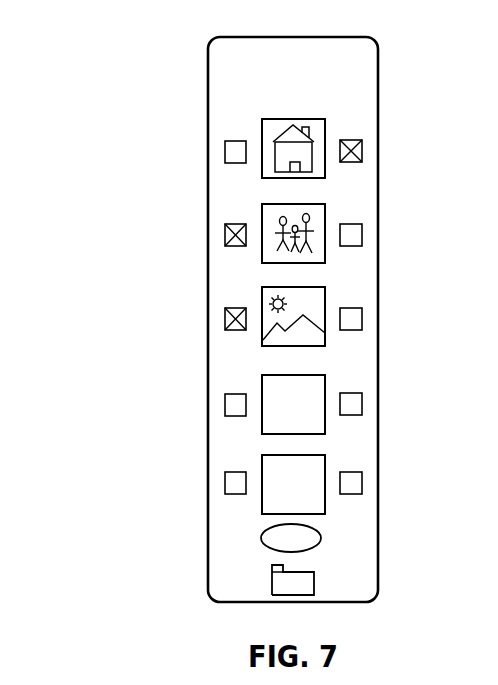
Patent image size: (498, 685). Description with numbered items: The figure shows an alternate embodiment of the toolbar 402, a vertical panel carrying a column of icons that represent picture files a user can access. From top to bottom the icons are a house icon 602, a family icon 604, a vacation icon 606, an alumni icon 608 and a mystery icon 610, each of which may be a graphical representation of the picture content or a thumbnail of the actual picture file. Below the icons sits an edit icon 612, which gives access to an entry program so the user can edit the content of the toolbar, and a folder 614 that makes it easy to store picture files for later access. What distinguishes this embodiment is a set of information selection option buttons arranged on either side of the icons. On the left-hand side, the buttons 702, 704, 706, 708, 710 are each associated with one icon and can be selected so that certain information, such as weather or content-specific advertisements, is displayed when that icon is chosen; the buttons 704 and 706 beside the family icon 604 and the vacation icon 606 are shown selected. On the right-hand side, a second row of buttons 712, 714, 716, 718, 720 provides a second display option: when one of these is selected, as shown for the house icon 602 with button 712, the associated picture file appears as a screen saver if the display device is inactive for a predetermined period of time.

The toolbar 402 is at (228, 58).
The house icon 602 is at (262, 130).
The family icon 604 is at (262, 212).
The vacation icon 606 is at (262, 292).
The alumni icon 608 is at (262, 378).
The mystery icon 610 is at (262, 457).
The edit icon 612 is at (262, 539).
The folder 614 is at (272, 588).
The information selection option button 702 is at (226, 146).
The information selection option button 704 is at (226, 228).
The information selection option button 706 is at (226, 311).
The information selection option button 708 is at (226, 396).
The information selection option button 710 is at (226, 476).
The information selection option button 712 is at (361, 141).
The information selection option button 714 is at (361, 225).
The information selection option button 716 is at (361, 310).
The information selection option button 718 is at (361, 394).
The information selection option button 720 is at (359, 477).